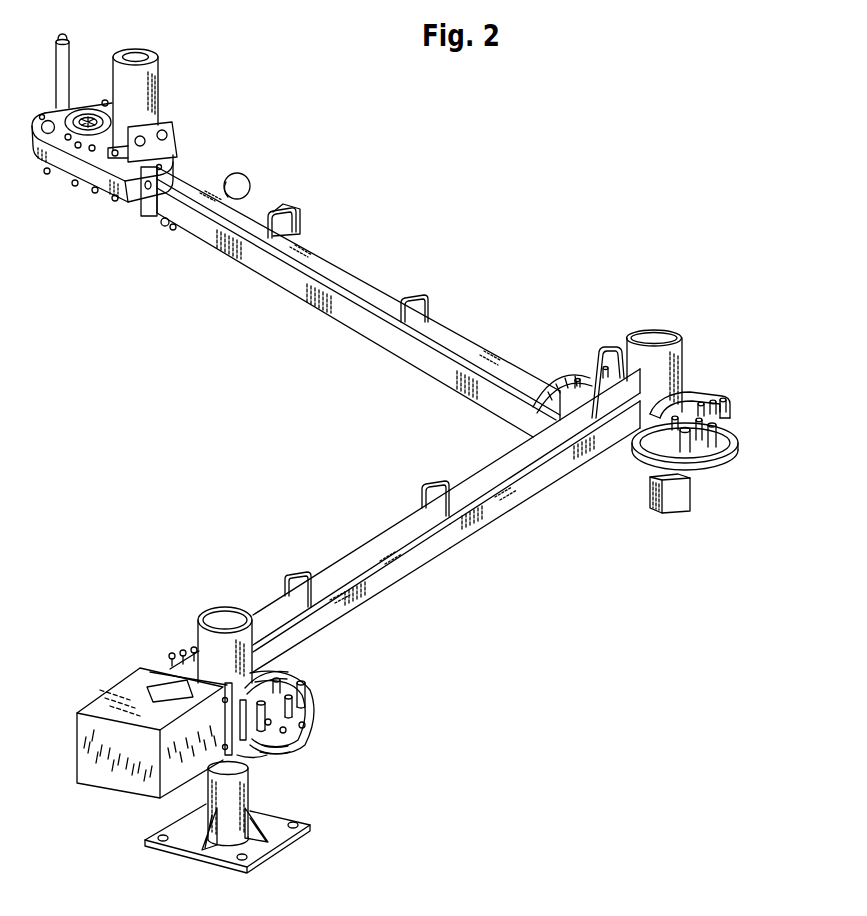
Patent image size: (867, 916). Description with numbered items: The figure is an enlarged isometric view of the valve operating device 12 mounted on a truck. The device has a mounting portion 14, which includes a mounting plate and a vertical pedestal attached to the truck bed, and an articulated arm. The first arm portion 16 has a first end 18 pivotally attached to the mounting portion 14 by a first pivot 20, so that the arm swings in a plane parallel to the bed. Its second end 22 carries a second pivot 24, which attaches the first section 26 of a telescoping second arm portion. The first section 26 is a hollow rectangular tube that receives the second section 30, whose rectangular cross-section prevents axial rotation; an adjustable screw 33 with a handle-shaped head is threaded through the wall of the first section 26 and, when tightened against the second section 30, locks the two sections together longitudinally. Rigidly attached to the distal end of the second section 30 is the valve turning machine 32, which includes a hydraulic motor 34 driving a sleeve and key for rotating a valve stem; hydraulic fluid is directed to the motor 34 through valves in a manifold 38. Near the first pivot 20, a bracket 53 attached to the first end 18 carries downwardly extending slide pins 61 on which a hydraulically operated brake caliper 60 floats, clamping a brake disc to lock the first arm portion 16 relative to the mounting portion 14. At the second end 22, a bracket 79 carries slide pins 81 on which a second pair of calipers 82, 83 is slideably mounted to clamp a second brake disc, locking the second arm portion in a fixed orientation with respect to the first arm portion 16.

The valve operating device 12 is at (385, 453).
The mounting portion 14 is at (255, 780).
The first arm portion 16 is at (347, 549).
The first end 18 is at (260, 607).
The first pivot 20 is at (198, 632).
The second end 22 is at (627, 392).
The second pivot 24 is at (680, 380).
The first section 26 is at (323, 318).
The second section 30 is at (146, 197).
The valve turning machine 32 is at (70, 166).
The adjustable screw 33 is at (307, 212).
The hydraulic motor 34 is at (162, 93).
The manifold 38 is at (100, 695).
The bracket 53 is at (263, 667).
The brake caliper 60 is at (310, 700).
The slide pins 61 is at (270, 672).
The bracket 79 is at (693, 390).
The slide pins 81 is at (703, 400).
The caliper 82 is at (733, 441).
The caliper 83 is at (597, 350).